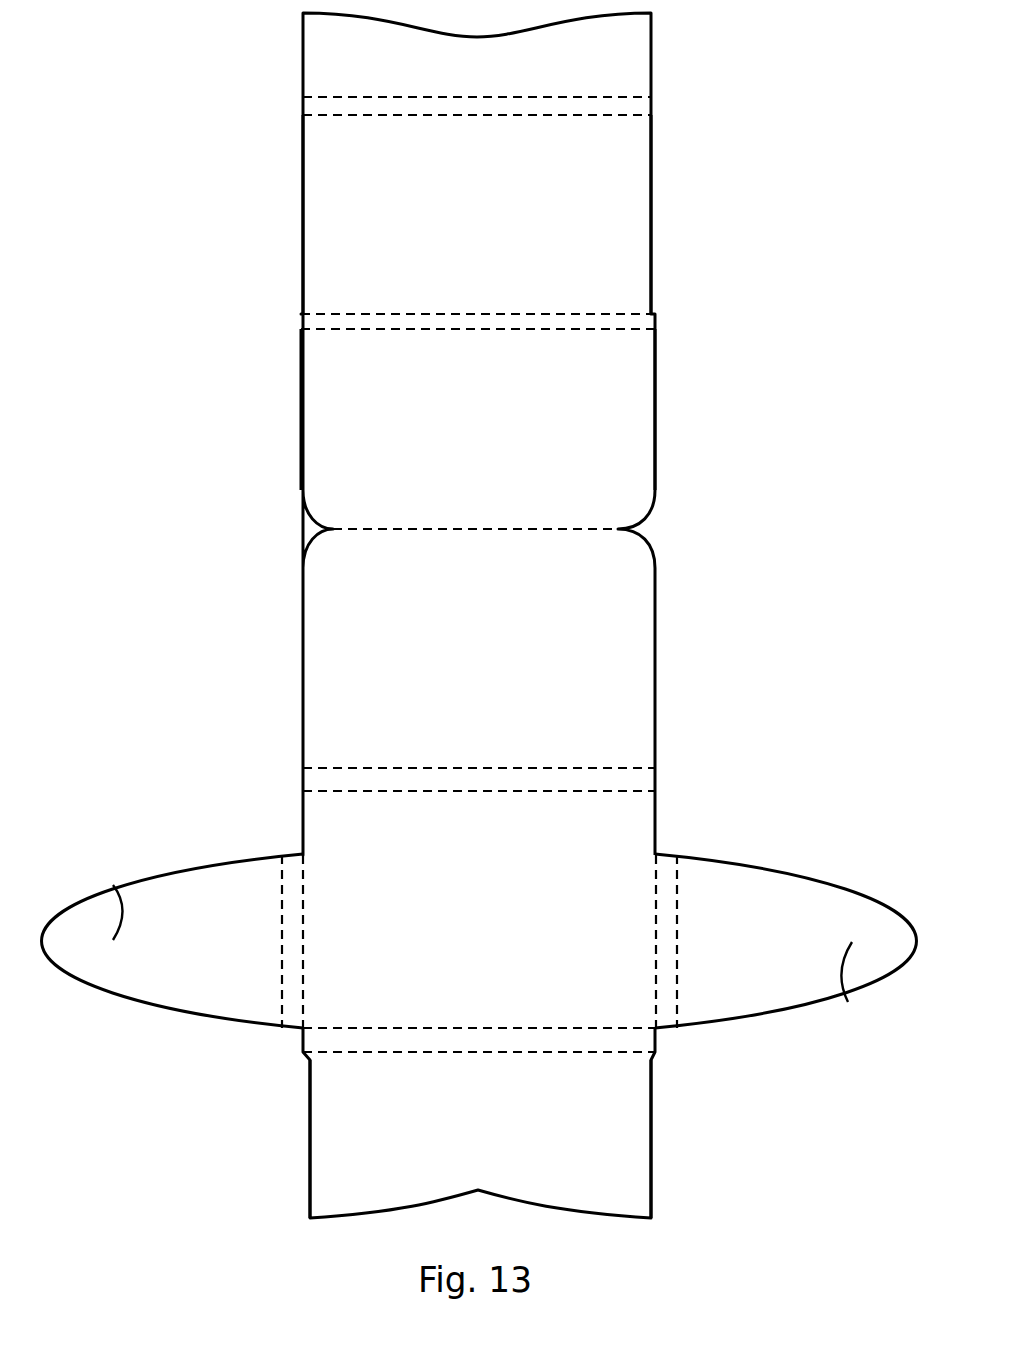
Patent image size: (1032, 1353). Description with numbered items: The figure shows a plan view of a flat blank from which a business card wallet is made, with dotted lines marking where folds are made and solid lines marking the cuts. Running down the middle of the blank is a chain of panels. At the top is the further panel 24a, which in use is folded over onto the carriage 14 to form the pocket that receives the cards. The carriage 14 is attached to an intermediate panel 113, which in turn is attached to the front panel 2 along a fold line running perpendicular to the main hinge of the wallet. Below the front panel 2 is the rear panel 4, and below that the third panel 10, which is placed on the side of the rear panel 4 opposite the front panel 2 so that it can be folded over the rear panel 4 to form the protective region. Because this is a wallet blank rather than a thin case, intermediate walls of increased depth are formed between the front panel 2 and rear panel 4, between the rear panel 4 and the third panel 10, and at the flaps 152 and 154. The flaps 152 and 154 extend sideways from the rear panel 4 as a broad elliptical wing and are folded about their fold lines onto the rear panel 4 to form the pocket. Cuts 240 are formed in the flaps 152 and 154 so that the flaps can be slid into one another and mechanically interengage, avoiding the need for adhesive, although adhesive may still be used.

The front panel 2 is at (632, 656).
The further panel 24a is at (626, 81).
The carriage 14 is at (632, 229).
The intermediate panel 113 is at (632, 443).
The rear panel 4 is at (625, 845).
The third panel 10 is at (618, 1137).
The flap 152 is at (198, 1000).
The flap 154 is at (792, 898).
The cuts 240 is at (123, 910).